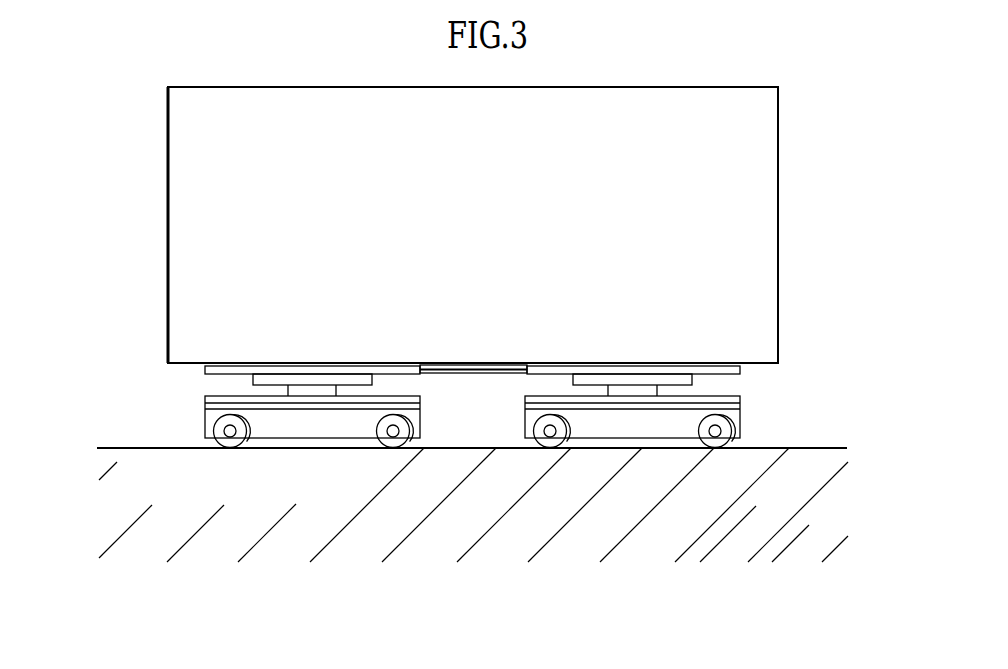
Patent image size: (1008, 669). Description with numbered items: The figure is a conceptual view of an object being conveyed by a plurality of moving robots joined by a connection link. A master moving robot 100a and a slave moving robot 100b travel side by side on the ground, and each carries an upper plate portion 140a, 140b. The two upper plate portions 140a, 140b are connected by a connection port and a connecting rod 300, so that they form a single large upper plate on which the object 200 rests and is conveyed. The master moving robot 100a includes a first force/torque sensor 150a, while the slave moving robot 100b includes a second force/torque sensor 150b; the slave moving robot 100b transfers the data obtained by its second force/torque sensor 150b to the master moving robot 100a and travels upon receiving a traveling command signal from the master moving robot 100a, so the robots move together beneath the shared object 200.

The master moving robot 100a is at (320, 427).
The slave moving robot 100b is at (640, 430).
The upper plate portion 140a is at (203, 373).
The upper plate portion 140b is at (742, 368).
The first force/torque sensor 150a is at (252, 378).
The second force/torque sensor 150b is at (692, 378).
The object 200 is at (767, 240).
The connecting rod 300 is at (472, 374).